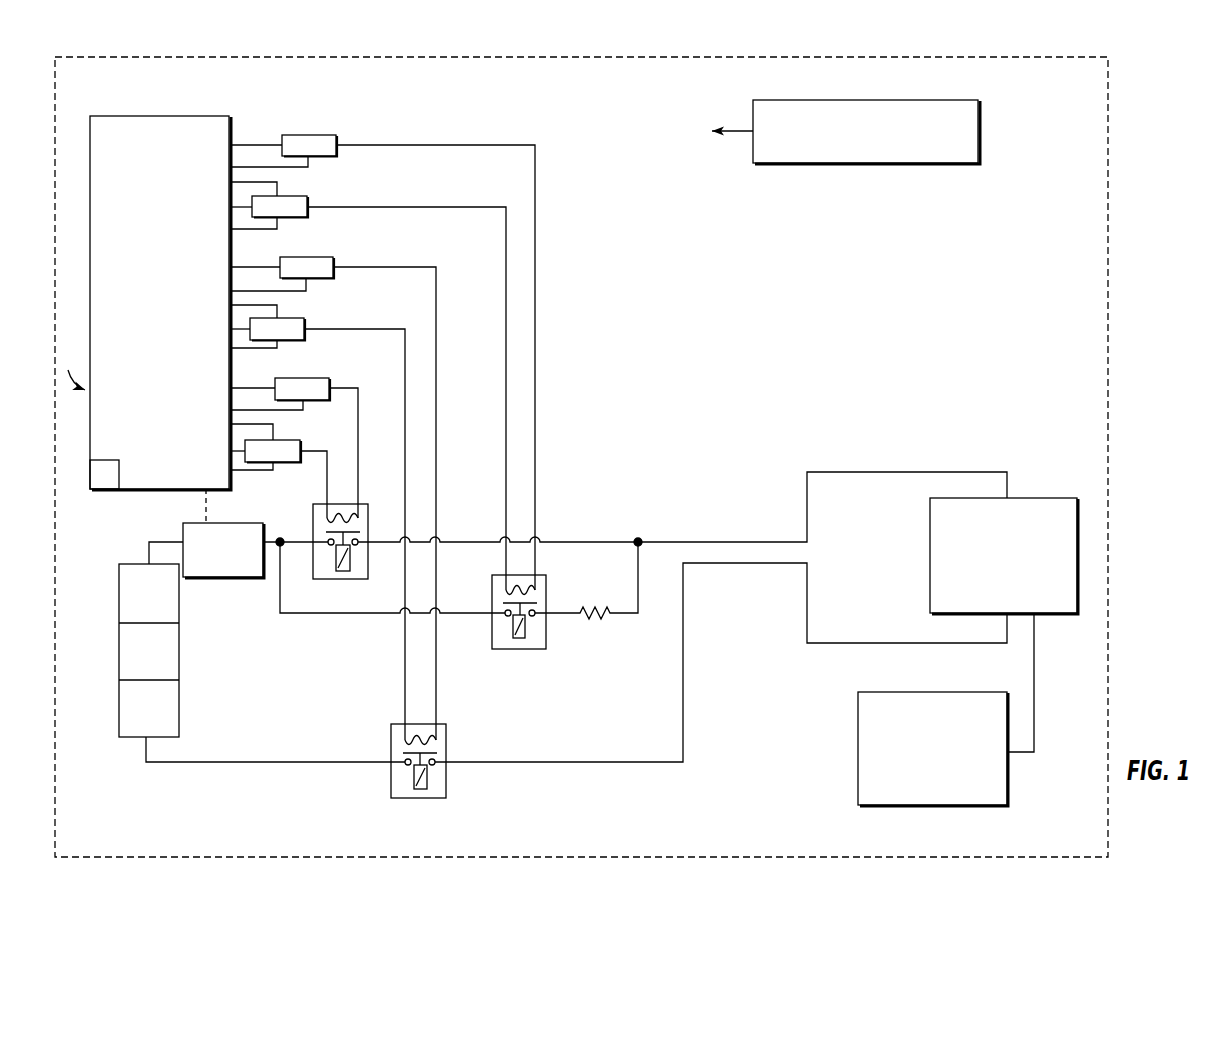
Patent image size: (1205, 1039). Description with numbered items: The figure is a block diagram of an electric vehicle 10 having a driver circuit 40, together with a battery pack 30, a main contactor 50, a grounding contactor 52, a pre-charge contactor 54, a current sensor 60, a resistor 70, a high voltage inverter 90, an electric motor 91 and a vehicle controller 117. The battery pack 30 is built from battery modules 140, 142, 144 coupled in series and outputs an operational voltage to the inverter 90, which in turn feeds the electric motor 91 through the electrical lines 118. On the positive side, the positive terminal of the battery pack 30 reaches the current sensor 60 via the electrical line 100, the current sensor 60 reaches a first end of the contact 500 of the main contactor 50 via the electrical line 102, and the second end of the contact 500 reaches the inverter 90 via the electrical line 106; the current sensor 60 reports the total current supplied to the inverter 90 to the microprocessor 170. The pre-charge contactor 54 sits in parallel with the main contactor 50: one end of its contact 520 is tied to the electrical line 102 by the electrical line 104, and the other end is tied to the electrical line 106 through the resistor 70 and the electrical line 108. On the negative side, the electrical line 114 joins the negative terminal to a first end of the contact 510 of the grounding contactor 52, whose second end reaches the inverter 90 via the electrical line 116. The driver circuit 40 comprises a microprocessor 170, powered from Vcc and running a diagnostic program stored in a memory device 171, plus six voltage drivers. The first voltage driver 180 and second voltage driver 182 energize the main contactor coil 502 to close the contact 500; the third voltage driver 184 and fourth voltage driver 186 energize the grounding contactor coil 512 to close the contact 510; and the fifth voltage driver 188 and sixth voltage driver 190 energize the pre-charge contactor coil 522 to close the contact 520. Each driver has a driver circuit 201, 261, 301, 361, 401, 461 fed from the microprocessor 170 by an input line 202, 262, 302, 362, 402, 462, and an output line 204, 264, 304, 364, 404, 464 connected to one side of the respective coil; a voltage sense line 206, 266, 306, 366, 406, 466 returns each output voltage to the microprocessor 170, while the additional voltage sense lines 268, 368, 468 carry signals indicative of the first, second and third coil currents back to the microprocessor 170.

The electric vehicle 10 is at (685, 50).
The battery pack 30 is at (152, 653).
The driver circuit 40 is at (582, 180).
The main contactor 50 is at (359, 516).
The grounding contactor 52 is at (415, 742).
The pre-charge contactor 54 is at (533, 597).
The current sensor 60 is at (222, 523).
The resistor 70 is at (600, 620).
The high voltage inverter 90 is at (1035, 497).
The electric motor 91 is at (965, 692).
The electrical line 100 is at (166, 542).
The electrical line 102 is at (294, 542).
The electrical line 104 is at (324, 613).
The electrical line 106 is at (598, 542).
The electrical line 108 is at (640, 592).
The electrical line 114 is at (245, 762).
The electrical line 116 is at (540, 762).
The vehicle controller 117 is at (978, 125).
The electrical lines 118 is at (1034, 690).
The battery module 140 is at (130, 596).
The battery module 142 is at (130, 653).
The battery module 144 is at (130, 710).
The microprocessor 170 is at (146, 278).
The memory device 171 is at (107, 460).
The first voltage driver 180 is at (343, 360).
The second voltage driver 182 is at (343, 423).
The third voltage driver 184 is at (382, 248).
The fourth voltage driver 186 is at (365, 302).
The fifth voltage driver 188 is at (382, 118).
The sixth voltage driver 190 is at (382, 184).
The driver circuit 201 is at (306, 378).
The input line 202 is at (258, 388).
The output line 204 is at (360, 425).
The voltage sense line 206 is at (242, 409).
The driver circuit 261 is at (296, 448).
The input line 262 is at (242, 451).
The output line 264 is at (327, 475).
The voltage sense line 266 is at (242, 424).
The voltage sense line 268 is at (242, 470).
The driver circuit 301 is at (303, 257).
The input line 302 is at (255, 267).
The output line 304 is at (438, 284).
The voltage sense line 306 is at (307, 285).
The driver circuit 361 is at (297, 318).
The input line 362 is at (242, 329).
The output line 364 is at (407, 370).
The voltage sense line 366 is at (242, 304).
The voltage sense line 368 is at (242, 348).
The driver circuit 401 is at (296, 135).
The input line 402 is at (264, 145).
The output line 404 is at (537, 268).
The voltage sense line 406 is at (242, 166).
The driver circuit 461 is at (300, 196).
The input line 462 is at (242, 207).
The output line 464 is at (508, 313).
The voltage sense line 466 is at (242, 182).
The voltage sense line 468 is at (242, 229).
The contact 500 is at (352, 532).
The main contactor coil 502 is at (342, 515).
The contact 510 is at (437, 752).
The grounding contactor coil 512 is at (410, 741).
The contact 520 is at (540, 603).
The pre-charge contactor coil 522 is at (508, 588).